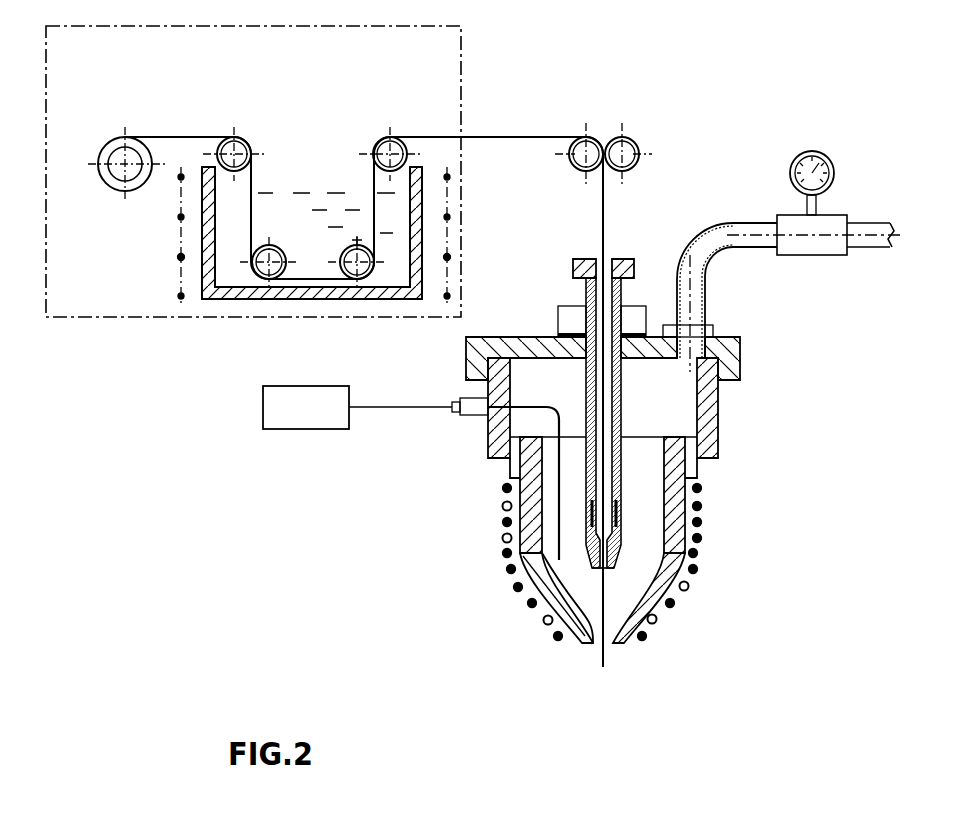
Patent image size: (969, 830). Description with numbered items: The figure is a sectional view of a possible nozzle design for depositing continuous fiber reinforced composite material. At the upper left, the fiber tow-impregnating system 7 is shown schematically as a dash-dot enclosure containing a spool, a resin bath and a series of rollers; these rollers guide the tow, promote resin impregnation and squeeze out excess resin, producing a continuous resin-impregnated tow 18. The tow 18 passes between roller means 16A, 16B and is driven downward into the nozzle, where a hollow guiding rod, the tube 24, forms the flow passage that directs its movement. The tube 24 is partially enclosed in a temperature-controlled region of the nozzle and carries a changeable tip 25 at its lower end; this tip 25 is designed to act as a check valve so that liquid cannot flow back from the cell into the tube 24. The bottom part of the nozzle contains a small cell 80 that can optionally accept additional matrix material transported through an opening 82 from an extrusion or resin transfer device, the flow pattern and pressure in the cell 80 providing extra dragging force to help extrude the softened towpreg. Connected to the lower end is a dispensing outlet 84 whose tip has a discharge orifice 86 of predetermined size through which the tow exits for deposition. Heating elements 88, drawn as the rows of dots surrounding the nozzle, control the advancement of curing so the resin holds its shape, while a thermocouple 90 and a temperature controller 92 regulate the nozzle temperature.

The fiber tow-impregnating system 7 is at (180, 331).
The resin-impregnated tow 18 is at (514, 137).
The roller means 16A is at (577, 139).
The roller means 16B is at (634, 141).
The tube 24 is at (580, 293).
The opening 82 is at (690, 302).
The cell 80 is at (642, 498).
The dispensing outlet 84 is at (672, 548).
The changeable tip 25 is at (620, 557).
The discharge orifice 86 is at (605, 647).
The heating elements 88 is at (518, 587).
The thermocouple 90 is at (560, 525).
The temperature controller 92 is at (290, 417).